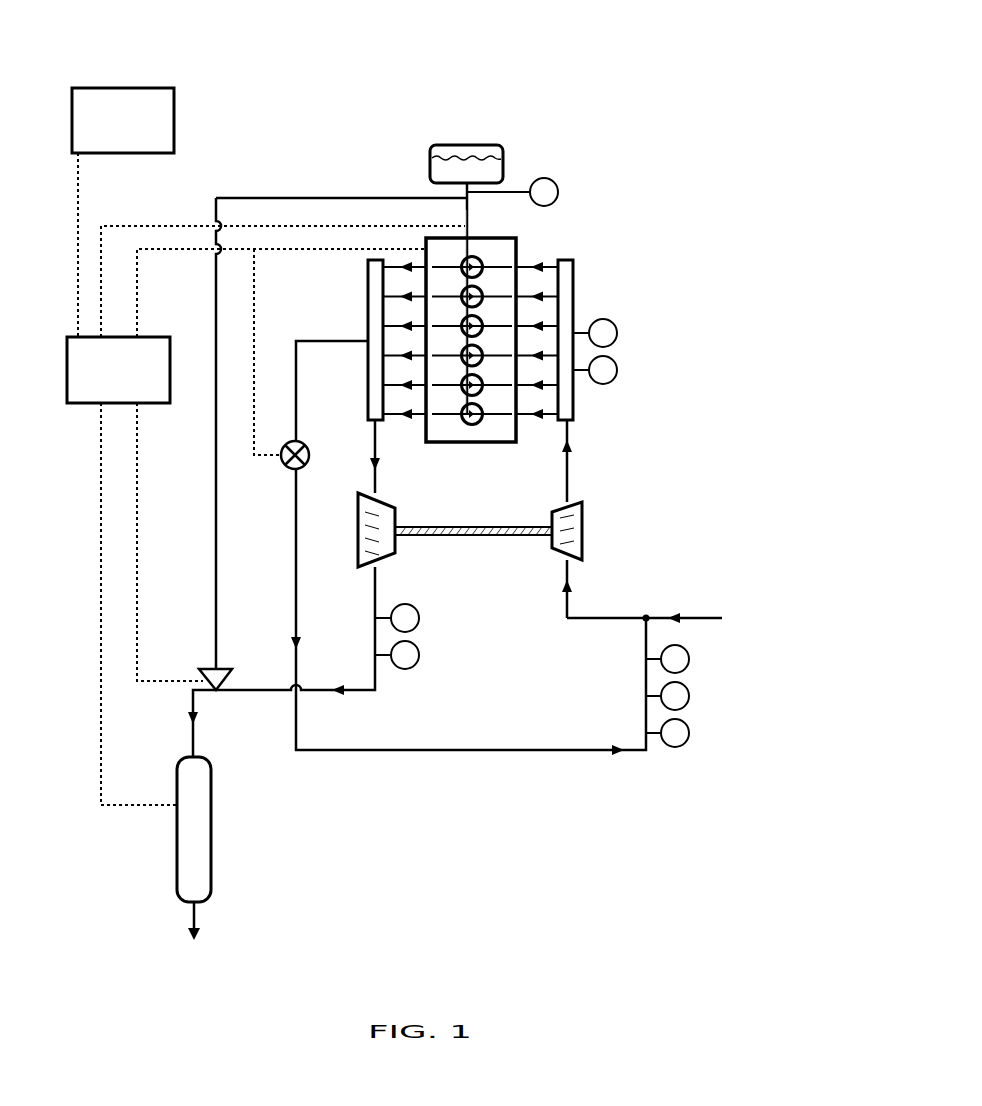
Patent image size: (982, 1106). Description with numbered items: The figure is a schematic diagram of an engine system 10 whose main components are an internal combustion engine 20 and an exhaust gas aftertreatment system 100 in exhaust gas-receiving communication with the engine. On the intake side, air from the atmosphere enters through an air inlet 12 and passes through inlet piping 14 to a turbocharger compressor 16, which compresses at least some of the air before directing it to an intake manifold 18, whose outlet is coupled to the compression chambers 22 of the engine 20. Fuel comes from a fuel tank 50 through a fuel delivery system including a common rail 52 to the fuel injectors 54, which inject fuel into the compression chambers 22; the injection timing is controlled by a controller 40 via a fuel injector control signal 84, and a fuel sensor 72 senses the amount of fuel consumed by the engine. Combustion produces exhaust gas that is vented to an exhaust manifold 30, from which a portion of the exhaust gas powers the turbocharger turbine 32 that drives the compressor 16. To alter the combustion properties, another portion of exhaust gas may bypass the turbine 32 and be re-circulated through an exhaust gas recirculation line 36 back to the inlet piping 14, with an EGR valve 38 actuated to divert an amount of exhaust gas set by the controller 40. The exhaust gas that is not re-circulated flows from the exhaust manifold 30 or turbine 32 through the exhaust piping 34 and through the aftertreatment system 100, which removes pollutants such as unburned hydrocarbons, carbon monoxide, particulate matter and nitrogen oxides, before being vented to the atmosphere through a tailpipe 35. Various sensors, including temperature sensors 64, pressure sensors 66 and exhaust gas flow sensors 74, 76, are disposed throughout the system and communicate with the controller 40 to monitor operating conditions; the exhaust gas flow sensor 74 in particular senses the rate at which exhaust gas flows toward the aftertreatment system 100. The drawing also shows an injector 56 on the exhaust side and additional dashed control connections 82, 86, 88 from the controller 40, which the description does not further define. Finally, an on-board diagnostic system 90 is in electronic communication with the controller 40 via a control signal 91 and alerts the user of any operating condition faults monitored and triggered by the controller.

The engine system 10 is at (600, 80).
The air inlet 12 is at (710, 620).
The inlet piping 14 is at (626, 617).
The turbocharger compressor 16 is at (582, 520).
The intake manifold 18 is at (573, 279).
The internal combustion engine 20 is at (516, 257).
The compression chambers 22 is at (479, 424).
The exhaust manifold 30 is at (368, 272).
The turbocharger turbine 32 is at (395, 520).
The exhaust piping 34 is at (356, 692).
The tailpipe 35 is at (196, 912).
The exhaust gas recirculation (EGR) line 36 is at (296, 565).
The EGR valve 38 is at (300, 469).
The controller 40 is at (75, 403).
The fuel tank 50 is at (503, 152).
The common rail 52 is at (470, 224).
The fuel injectors 54 is at (480, 418).
The exhaust injector 56 is at (224, 664).
The temperature sensors 64 is at (617, 331).
The pressure sensors 66 is at (617, 368).
The fuel sensor 72 is at (558, 188).
The exhaust gas flow sensor 74 is at (419, 653).
The exhaust gas flow sensor 76 is at (689, 731).
The control line to EGR valve 82 is at (137, 296).
The fuel injector control signal 84 is at (114, 237).
The control line to exhaust injector 86 is at (152, 677).
The control line to aftertreatment 88 is at (128, 803).
The on-board diagnostic (OBD) system 90 is at (140, 88).
The control signal 91 is at (78, 232).
The exhaust gas aftertreatment system 100 is at (211, 812).